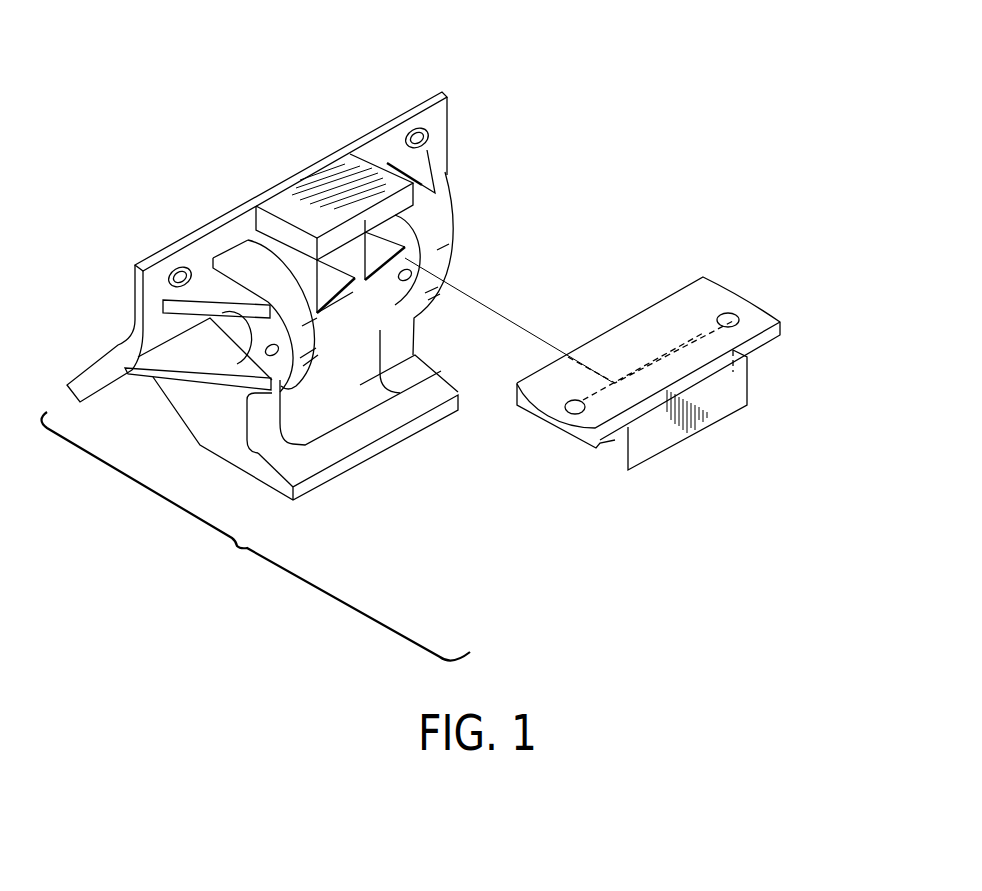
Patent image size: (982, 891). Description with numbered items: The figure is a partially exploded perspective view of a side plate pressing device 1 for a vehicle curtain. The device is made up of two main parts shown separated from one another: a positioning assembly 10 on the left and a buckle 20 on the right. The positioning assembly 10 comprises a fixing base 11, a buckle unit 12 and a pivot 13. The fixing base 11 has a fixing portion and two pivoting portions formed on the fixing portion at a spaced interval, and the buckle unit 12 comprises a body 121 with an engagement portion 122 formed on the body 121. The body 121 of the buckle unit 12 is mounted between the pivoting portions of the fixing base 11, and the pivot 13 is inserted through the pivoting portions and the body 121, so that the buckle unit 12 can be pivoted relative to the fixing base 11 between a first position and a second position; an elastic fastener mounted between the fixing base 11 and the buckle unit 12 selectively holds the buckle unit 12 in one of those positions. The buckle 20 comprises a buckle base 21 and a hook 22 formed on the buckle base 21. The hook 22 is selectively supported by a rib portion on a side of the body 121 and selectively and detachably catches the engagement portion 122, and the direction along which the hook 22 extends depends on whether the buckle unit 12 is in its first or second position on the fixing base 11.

The side plate pressing device 1 is at (591, 163).
The positioning assembly 10 is at (471, 150).
The fixing base 11 is at (208, 210).
The buckle unit 12 is at (343, 320).
The body 121 is at (353, 292).
The engagement portion 122 is at (341, 170).
The pivot 13 is at (248, 328).
The buckle 20 is at (746, 296).
The buckle base 21 is at (663, 313).
The hook 22 is at (617, 455).